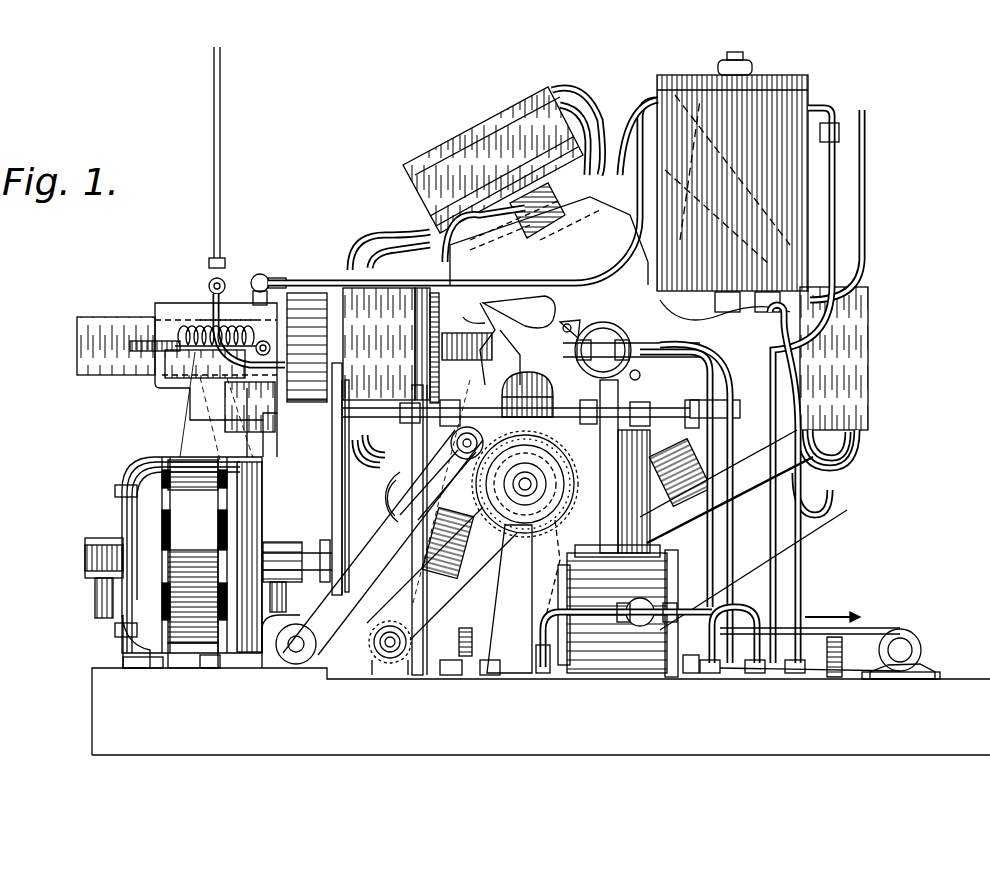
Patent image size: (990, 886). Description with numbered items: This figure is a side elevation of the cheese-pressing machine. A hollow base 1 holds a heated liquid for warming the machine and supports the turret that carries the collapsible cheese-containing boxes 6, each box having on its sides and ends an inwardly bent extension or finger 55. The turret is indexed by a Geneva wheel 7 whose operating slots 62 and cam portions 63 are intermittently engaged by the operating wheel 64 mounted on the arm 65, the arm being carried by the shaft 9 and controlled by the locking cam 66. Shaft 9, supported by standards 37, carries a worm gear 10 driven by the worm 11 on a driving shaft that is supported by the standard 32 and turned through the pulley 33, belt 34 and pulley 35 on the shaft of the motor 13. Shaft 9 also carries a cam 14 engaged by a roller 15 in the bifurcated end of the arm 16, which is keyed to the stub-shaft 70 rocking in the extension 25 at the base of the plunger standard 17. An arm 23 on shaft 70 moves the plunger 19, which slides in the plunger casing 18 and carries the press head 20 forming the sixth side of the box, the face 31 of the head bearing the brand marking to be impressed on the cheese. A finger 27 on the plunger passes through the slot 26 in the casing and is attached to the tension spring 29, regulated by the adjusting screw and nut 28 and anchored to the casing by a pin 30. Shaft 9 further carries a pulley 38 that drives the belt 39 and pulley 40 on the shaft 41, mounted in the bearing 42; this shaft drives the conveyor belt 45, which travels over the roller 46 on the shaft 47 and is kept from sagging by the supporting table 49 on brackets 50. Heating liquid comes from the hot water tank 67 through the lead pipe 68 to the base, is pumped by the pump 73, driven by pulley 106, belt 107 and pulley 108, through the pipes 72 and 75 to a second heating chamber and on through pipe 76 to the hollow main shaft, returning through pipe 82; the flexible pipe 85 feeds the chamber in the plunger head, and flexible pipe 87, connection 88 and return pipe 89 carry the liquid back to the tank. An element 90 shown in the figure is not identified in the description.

The hollow base 1 is at (428, 766).
The collapsible cheese-containing boxes 6 is at (465, 140).
The Geneva wheel 7 is at (549, 234).
The shaft 9 is at (535, 482).
The worm gear 10 is at (570, 512).
The worm 11 is at (545, 400).
The motor 13 is at (140, 510).
The cam 14 is at (400, 488).
The roller 15 is at (415, 395).
The arm 16 is at (383, 542).
The plunger standard 17 is at (260, 447).
The plunger casing 18 is at (168, 305).
The plunger 19 is at (100, 368).
The press head 20 is at (296, 395).
The arm 23 is at (280, 545).
The extension 25 is at (290, 665).
The slot 26 is at (200, 335).
The finger 27 is at (185, 352).
The adjusting screw and nut 28 is at (165, 342).
The tension spring 29 is at (195, 352).
The pin 30 is at (280, 345).
The face 31 is at (340, 285).
The standard 32 is at (425, 590).
The pulley 33 is at (338, 440).
The belt 34 is at (350, 497).
The pulley 35 is at (345, 560).
The standards 37 is at (530, 603).
The pulley 38 is at (312, 540).
The belt 39 is at (439, 510).
The pulley 40 is at (372, 648).
The shaft 41 is at (385, 640).
The bearing 42 is at (385, 670).
The conveyor belt 45 is at (885, 628).
The roller 46 is at (918, 632).
The shaft 47 is at (905, 652).
The supporting table 49 is at (810, 620).
The brackets 50 is at (840, 636).
The extension or finger 55 is at (540, 250).
The operating slots 62 is at (545, 302).
The cam portions 63 is at (485, 338).
The operating wheel 64 is at (508, 380).
The arm 65 is at (477, 417).
The locking cam 66 is at (567, 570).
The hot water tank or reservoir 67 is at (808, 152).
The lead pipe 68 is at (802, 565).
The stub-shaft 70 is at (305, 660).
The pipe 72 is at (540, 650).
The pump 73 is at (610, 655).
The pipe 75 is at (742, 622).
The pipe 76 is at (648, 322).
The pipe 82 is at (737, 423).
The flexible pipe 85 is at (255, 320).
The flexible pipe 87 is at (272, 300).
The connection 88 is at (262, 274).
The return pipe 89 is at (284, 283).
The rod 90 is at (222, 152).
The pulley 106 is at (718, 392).
The belt 107 is at (778, 535).
The pulley 108 is at (688, 675).